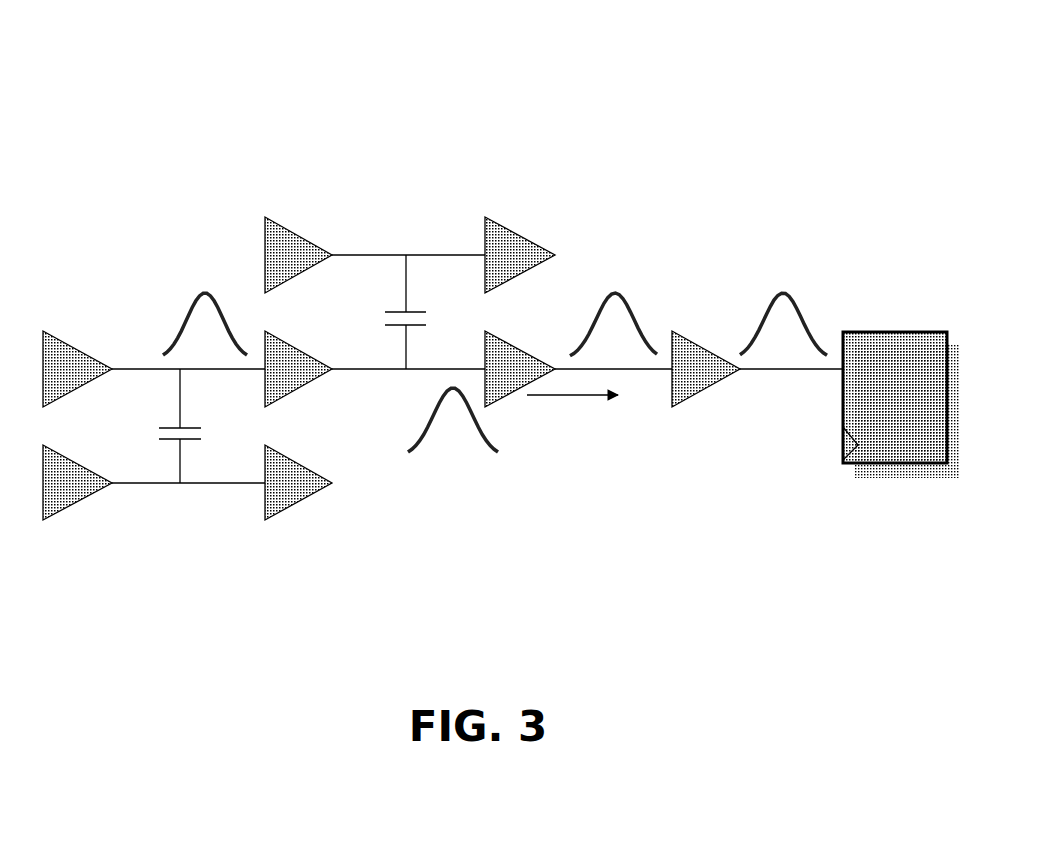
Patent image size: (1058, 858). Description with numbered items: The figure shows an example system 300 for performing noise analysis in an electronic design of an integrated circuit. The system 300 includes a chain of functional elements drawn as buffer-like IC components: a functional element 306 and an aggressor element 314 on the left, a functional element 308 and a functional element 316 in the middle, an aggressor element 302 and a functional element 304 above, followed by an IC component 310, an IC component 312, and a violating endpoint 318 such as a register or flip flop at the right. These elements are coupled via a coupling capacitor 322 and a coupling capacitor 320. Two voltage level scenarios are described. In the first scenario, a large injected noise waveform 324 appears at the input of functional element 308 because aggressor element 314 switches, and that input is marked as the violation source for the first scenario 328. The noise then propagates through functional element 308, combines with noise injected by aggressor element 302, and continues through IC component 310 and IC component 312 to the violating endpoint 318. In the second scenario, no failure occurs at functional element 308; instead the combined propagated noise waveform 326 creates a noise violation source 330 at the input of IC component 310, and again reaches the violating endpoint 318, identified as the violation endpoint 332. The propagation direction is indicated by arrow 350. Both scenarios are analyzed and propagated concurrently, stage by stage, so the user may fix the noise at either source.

The system 300 is at (640, 66).
The aggressor element 302 is at (277, 222).
The functional element 304 is at (510, 223).
The functional element 306 is at (70, 338).
The functional element 308 is at (293, 347).
The IC component 310 is at (523, 343).
The IC component 312 is at (687, 335).
The aggressor element 314 is at (83, 463).
The functional element 316 is at (293, 467).
The violating endpoint 318 is at (882, 330).
The coupling capacitor 320 is at (402, 310).
The coupling capacitor 322 is at (173, 425).
The injected noise waveform 324 is at (175, 290).
The noise waveform 326 is at (642, 289).
The violation source for the first scenario 328 is at (252, 386).
The noise violation source 330 is at (474, 340).
The violation endpoint 332 is at (827, 393).
The noise propagation direction 350 is at (596, 395).